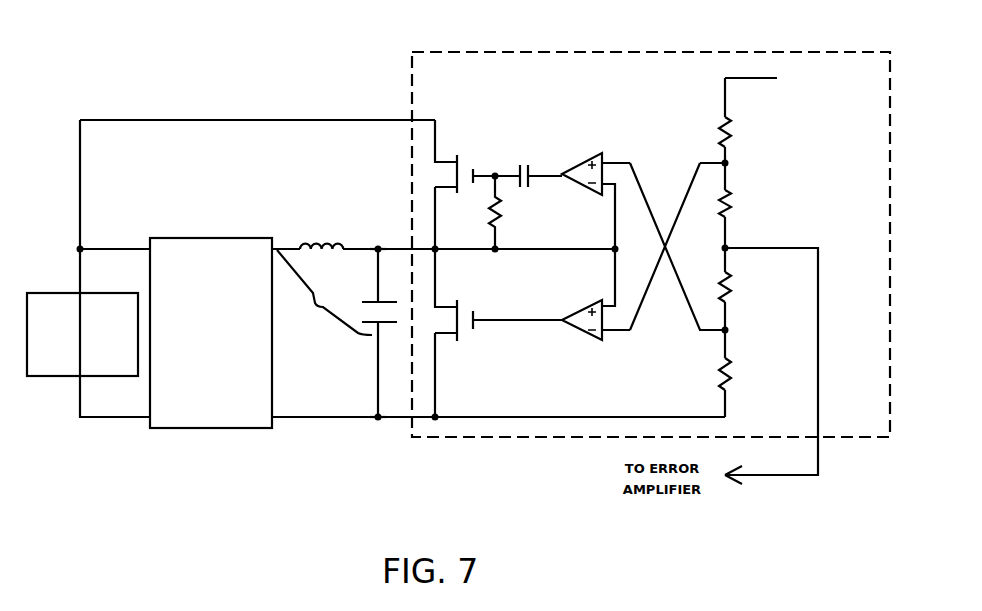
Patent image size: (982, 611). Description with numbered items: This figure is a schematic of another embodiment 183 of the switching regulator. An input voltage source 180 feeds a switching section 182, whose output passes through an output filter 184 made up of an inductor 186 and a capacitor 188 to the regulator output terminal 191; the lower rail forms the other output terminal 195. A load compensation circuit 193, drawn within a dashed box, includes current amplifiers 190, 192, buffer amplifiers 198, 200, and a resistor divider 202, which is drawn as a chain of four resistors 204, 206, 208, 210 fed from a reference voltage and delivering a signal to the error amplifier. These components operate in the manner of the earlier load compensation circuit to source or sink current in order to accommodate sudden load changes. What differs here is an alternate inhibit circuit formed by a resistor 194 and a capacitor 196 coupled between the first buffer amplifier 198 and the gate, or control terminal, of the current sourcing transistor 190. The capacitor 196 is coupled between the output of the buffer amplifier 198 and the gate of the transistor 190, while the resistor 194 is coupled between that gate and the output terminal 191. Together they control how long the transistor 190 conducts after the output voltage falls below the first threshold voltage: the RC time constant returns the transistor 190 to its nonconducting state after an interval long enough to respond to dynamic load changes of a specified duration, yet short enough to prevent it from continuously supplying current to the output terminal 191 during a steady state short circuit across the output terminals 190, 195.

The input voltage source 180 is at (97, 292).
The switching section 182 is at (208, 237).
The switching regulator embodiment 183 is at (204, 108).
The output filter 184 is at (324, 292).
The inductor 186 is at (313, 243).
The capacitor 188 is at (362, 307).
The current sourcing transistor 190 is at (445, 160).
The regulator output terminal 191 is at (377, 245).
The current amplifier 192 is at (445, 302).
The load compensation circuit 193 is at (550, 52).
The resistor 194 is at (486, 212).
The output terminal 195 is at (377, 415).
The capacitor 196 is at (528, 185).
The first buffer amplifier 198 is at (592, 156).
The buffer amplifier 200 is at (592, 302).
The resistor divider 202 is at (772, 241).
The resistor 204 is at (741, 132).
The resistor 206 is at (741, 203).
The resistor 208 is at (741, 287).
The resistor 210 is at (741, 374).